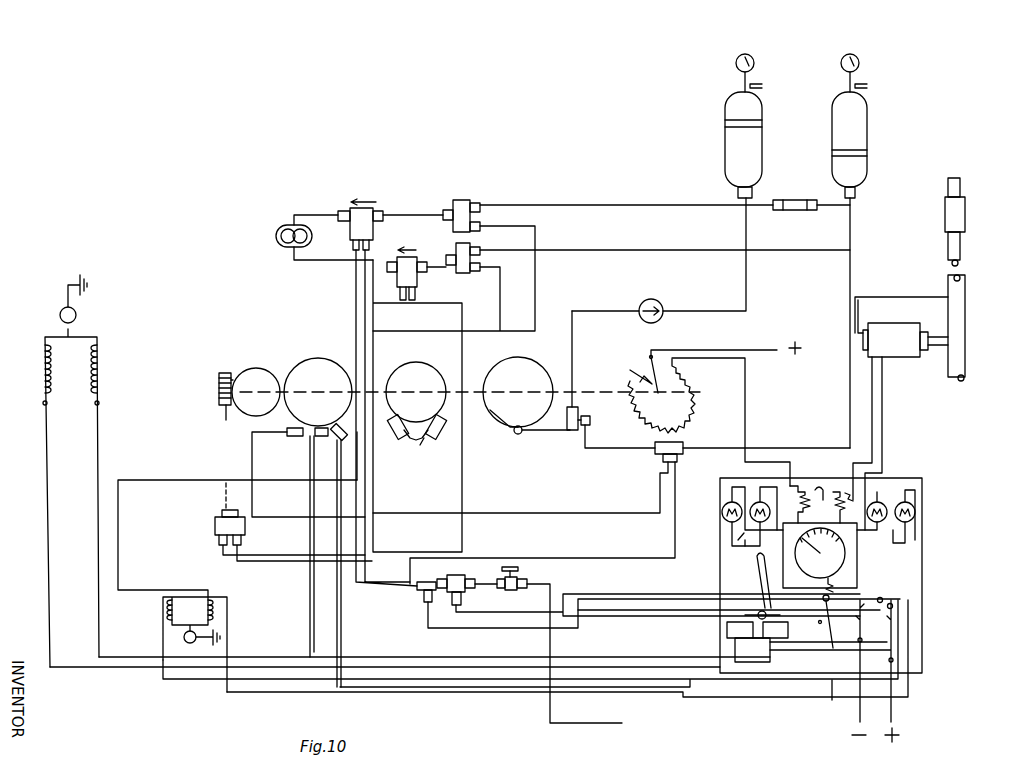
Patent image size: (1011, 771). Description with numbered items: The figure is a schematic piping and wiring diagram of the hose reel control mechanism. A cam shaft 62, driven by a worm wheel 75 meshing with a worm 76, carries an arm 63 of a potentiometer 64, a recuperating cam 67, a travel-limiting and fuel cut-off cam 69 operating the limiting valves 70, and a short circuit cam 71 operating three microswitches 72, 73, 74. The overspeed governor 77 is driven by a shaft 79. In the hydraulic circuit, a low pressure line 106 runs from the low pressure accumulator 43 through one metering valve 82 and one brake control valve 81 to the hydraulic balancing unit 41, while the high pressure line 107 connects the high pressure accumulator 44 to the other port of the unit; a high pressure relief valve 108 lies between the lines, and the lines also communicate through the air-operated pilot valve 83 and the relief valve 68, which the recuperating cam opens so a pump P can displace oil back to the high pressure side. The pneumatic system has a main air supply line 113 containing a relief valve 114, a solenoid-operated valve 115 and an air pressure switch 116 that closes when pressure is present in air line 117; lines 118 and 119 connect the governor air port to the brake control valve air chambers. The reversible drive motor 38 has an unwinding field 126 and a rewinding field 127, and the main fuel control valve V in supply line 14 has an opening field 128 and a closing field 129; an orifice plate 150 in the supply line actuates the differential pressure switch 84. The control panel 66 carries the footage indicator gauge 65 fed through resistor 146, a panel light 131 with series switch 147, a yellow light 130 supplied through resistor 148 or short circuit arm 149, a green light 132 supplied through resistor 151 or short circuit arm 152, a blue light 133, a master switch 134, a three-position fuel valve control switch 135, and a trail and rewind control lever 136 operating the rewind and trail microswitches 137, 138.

The reversible electric drive motor 38 is at (33, 347).
The unwinding field 126 is at (42, 373).
The rewinding field 127 is at (99, 374).
The valve-opening field 128 is at (170, 613).
The valve-closing field 129 is at (212, 612).
The overspeed governor 77 is at (215, 528).
The shaft 79 is at (222, 493).
The worm wheel 75 is at (251, 369).
The worm 76 is at (218, 404).
The short circuit cam 71 is at (294, 366).
The microswitch 72 is at (292, 437).
The microswitch 73 is at (322, 437).
The microswitch 74 is at (336, 426).
The hydraulic balancing unit 41 is at (278, 228).
The brake control valve 81 is at (374, 212).
The metering valve 82 is at (462, 200).
The line 119 is at (356, 330).
The line 118 is at (463, 472).
The travel-limiting and fuel cut-off cam 69 is at (425, 365).
The limiting valve 70 is at (416, 438).
The cam shaft 62 is at (468, 390).
The recuperating cam 67 is at (526, 369).
The relief valve 68 is at (586, 421).
The pump P is at (661, 303).
The potentiometer 64 is at (690, 404).
The arm 63 is at (633, 372).
The air-operated pilot valve 83 is at (684, 442).
The high pressure accumulator 44 is at (763, 160).
The low pressure accumulator 43 is at (868, 141).
The high pressure line 107 is at (635, 204).
The high pressure relief valve 108 is at (797, 200).
The low pressure line 106 is at (853, 236).
The main fuel control valve V is at (945, 226).
The fuel supply line 14 is at (967, 286).
The orifice plate 150 is at (958, 320).
The differential pressure switch 84 is at (906, 358).
The air pressure switch 116 is at (418, 596).
The air line 117 is at (393, 583).
The solenoid-operated valve 115 is at (461, 583).
The relief valve 114 is at (558, 573).
The main air supply line 113 is at (609, 725).
The control panel 66 is at (923, 641).
The panel light 131 is at (722, 512).
The yellow light 130 is at (760, 502).
The switch 147 is at (736, 538).
The green light 132 is at (887, 507).
The blue light 133 is at (916, 512).
The resistor 148 is at (800, 490).
The short circuit arm 149 is at (826, 492).
The resistor 151 is at (843, 498).
The short circuit arm 152 is at (852, 500).
The footage indicator gauge 65 is at (846, 564).
The resistor 146 is at (836, 586).
The trail and rewind control lever 136 is at (757, 562).
The rewind microswitch 137 is at (757, 636).
The trail microswitch 138 is at (727, 630).
The master switch 134 is at (832, 680).
The main fuel supply valve control switch 135 is at (886, 598).